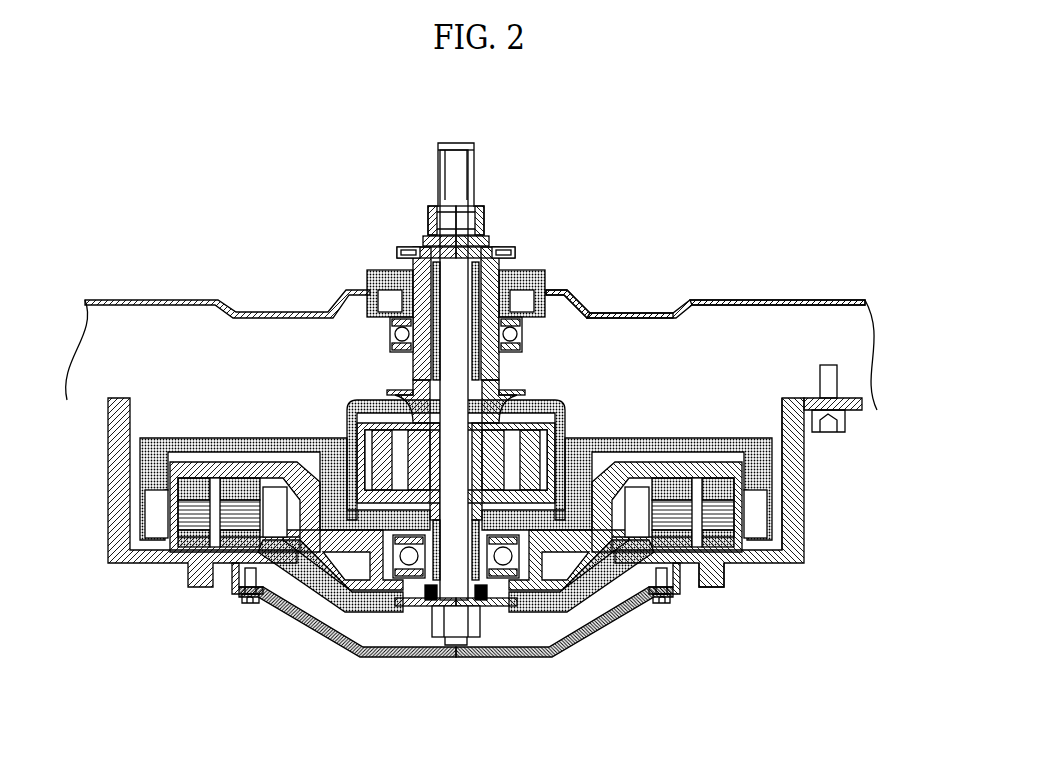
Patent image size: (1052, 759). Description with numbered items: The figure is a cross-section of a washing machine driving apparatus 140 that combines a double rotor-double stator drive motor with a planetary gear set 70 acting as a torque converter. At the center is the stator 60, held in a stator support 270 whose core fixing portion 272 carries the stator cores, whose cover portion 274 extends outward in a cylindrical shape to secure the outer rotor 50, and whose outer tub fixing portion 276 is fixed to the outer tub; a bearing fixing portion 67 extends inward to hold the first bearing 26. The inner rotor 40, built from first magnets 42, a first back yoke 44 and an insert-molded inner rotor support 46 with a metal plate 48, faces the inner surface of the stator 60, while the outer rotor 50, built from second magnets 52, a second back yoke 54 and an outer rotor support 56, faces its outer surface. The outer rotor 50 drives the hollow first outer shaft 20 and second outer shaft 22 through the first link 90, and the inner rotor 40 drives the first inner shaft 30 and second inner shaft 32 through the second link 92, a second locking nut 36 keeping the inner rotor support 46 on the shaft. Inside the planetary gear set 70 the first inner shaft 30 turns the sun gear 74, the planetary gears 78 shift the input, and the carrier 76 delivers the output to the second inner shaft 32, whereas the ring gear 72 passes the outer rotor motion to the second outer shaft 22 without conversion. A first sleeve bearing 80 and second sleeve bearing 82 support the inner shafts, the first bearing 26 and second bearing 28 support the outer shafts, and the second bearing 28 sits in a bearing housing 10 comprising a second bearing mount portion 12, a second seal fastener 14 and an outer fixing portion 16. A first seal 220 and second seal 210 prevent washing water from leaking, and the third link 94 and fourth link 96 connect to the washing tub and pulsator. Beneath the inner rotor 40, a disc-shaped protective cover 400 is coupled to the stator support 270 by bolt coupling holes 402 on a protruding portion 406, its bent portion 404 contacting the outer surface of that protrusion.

The bearing housing 10 is at (644, 302).
The second bearing mount portion 12 is at (541, 334).
The second seal fastener 14 is at (547, 300).
The outer fixing portion 16 is at (751, 306).
The first outer shaft 20 is at (433, 590).
The second outer shaft 22 is at (414, 300).
The first bearing 26 is at (540, 549).
The second bearing 28 is at (397, 334).
The first inner shaft 30 is at (511, 560).
The second inner shaft 32 is at (506, 282).
The second locking nut 36 is at (472, 636).
The inner rotor 40 is at (325, 601).
The first magnets 42 is at (240, 465).
The first back yoke 44 is at (282, 500).
The inner rotor support 46 is at (300, 583).
The metal plate 48 is at (398, 608).
The outer rotor 50 is at (142, 505).
The second magnets 52 is at (150, 541).
The second back yoke 54 is at (158, 520).
The outer rotor support 56 is at (200, 440).
The stator 60 is at (190, 563).
The bearing fixing portion 67 is at (560, 556).
The planetary gear set 70 is at (561, 405).
The ring gear 72 is at (579, 412).
The sun gear 74 is at (506, 395).
The carrier 76 is at (622, 413).
The planetary gears 78 is at (358, 438).
The first sleeve bearing 80 is at (578, 560).
The second sleeve bearing 82 is at (383, 305).
The first link 90 is at (385, 601).
The second link 92 is at (456, 638).
The third link 94 is at (488, 246).
The fourth link 96 is at (471, 160).
The washing machine driving apparatus 140 is at (777, 143).
The second seal 210 is at (523, 290).
The first seal 220 is at (483, 212).
The stator support 270 is at (746, 567).
The core fixing portion 272 is at (712, 589).
The cover portion 274 is at (806, 495).
The outer tub fixing portion 276 is at (804, 402).
The protective cover 400 is at (503, 662).
The bolt coupling holes 402 is at (236, 588).
The bent portion 404 is at (676, 588).
The protruding portion 406 is at (250, 604).